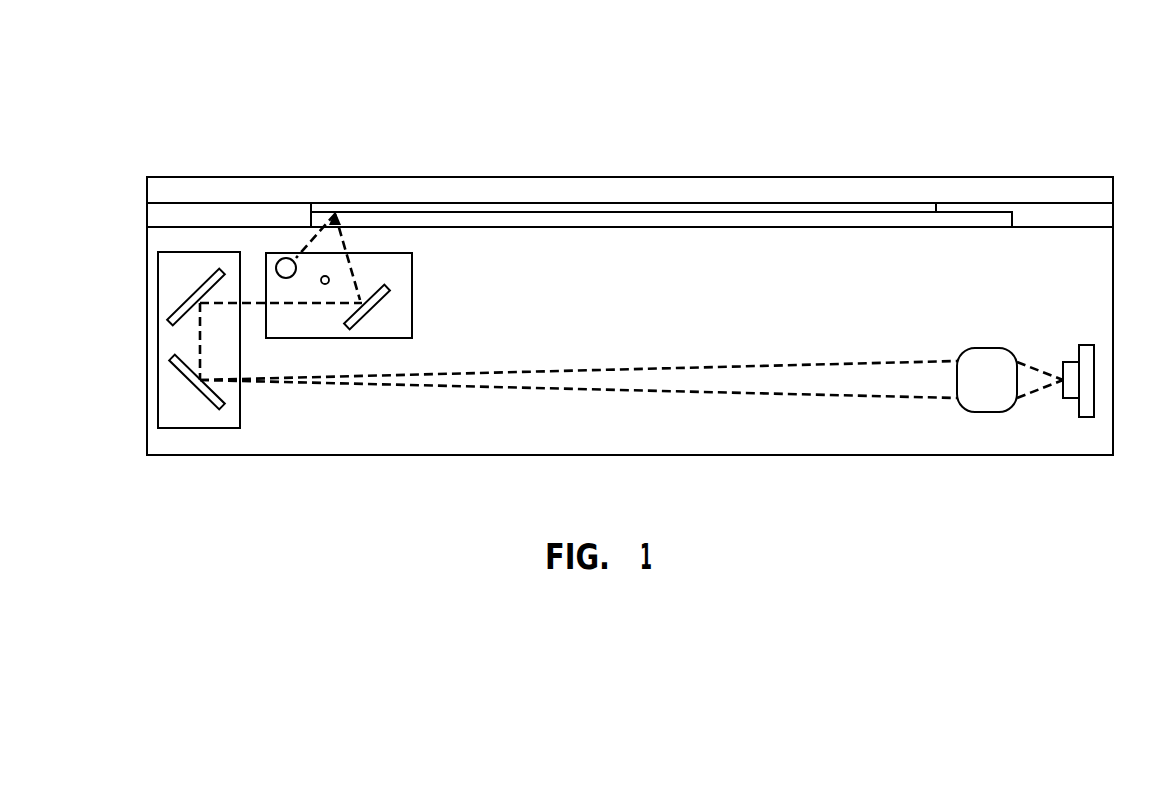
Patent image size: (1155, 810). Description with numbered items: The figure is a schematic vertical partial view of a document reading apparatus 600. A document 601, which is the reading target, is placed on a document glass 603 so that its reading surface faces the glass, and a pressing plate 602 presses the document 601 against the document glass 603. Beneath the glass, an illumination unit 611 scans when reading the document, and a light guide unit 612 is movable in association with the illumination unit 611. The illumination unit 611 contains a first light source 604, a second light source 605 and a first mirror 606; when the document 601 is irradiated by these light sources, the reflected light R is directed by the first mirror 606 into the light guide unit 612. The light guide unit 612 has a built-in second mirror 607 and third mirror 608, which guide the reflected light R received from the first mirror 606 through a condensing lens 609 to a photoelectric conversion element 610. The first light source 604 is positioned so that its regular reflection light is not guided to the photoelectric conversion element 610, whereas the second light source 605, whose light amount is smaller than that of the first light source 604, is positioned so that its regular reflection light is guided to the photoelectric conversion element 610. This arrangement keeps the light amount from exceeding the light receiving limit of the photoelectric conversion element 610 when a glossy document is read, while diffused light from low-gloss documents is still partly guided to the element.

The document reading apparatus 600 is at (320, 77).
The document 601 is at (687, 201).
The pressing plate 602 is at (561, 176).
The document glass 603 is at (812, 210).
The first light source 604 is at (287, 257).
The second light source 605 is at (325, 285).
The first mirror 606 is at (373, 310).
The second mirror 607 is at (196, 283).
The third mirror 608 is at (180, 370).
The condensing lens 609 is at (983, 348).
The photoelectric conversion element 610 is at (1079, 345).
The illumination unit 611 is at (412, 285).
The light guide unit 612 is at (158, 312).
The reflected light R is at (250, 298).